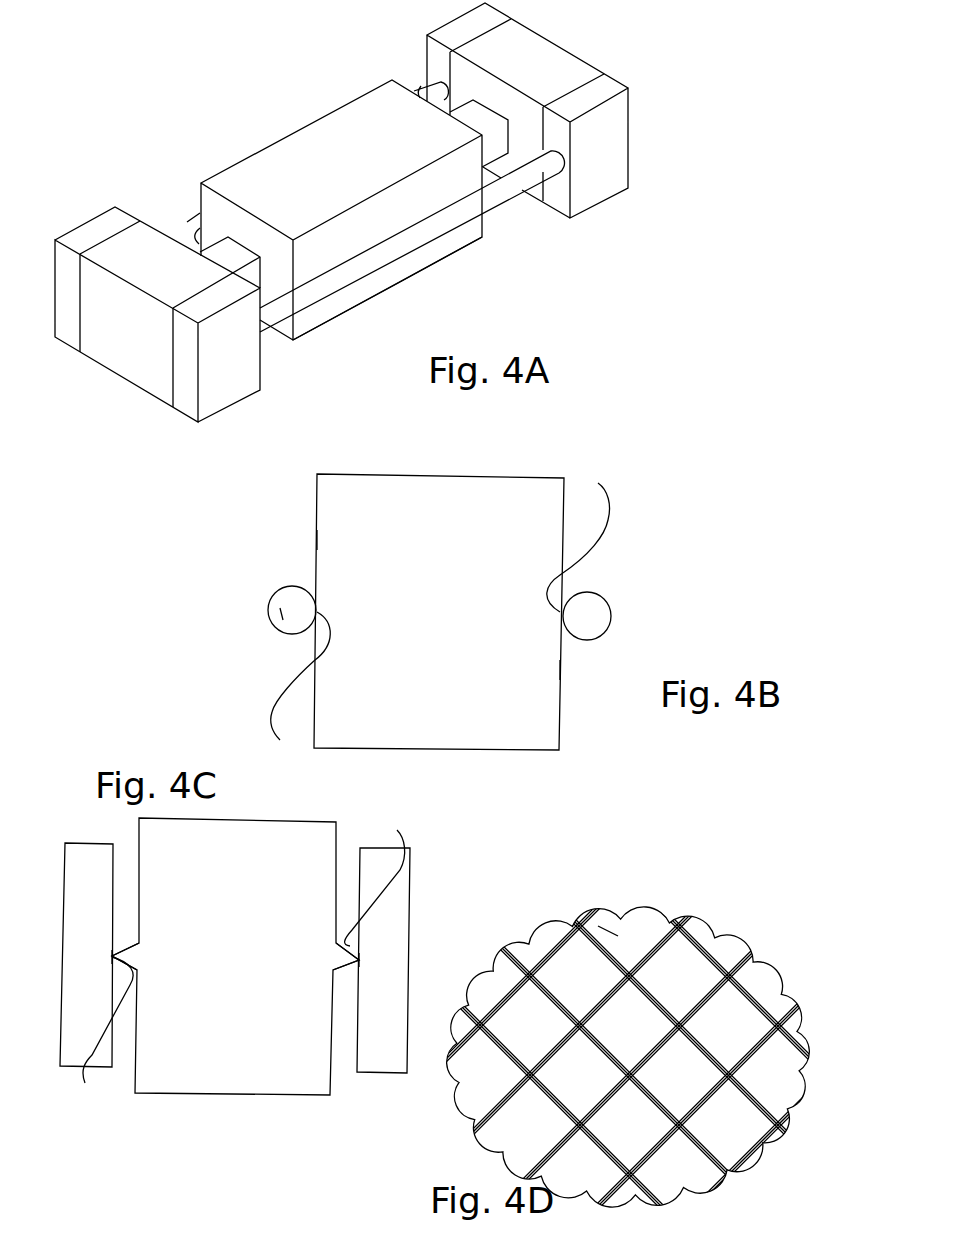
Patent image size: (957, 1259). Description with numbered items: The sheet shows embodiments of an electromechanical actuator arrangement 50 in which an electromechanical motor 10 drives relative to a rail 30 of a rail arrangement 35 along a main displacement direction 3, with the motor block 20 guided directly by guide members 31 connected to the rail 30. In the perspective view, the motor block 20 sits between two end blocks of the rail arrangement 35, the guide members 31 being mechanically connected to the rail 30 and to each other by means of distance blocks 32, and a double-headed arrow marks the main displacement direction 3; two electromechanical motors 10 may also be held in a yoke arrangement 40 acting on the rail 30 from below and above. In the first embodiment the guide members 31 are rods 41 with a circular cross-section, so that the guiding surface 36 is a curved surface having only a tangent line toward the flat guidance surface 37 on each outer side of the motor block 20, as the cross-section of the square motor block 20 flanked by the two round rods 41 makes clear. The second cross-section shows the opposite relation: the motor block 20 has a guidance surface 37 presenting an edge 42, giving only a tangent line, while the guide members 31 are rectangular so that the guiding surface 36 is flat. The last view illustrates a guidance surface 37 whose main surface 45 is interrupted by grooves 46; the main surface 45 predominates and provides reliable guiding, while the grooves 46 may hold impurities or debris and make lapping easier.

In FIG. 4A, the main displacement direction 3 is at (777, 173).
In FIG. 4A, the electromechanical motor 10 is at (273, 155).
In FIG. 4A, the motor block 20 is at (437, 188).
In FIG. 4B, the motor block 20 is at (527, 737).
In FIG. 4C, the motor block 20 is at (323, 1082).
In FIG. 4A, the rail 30 is at (225, 258).
In FIG. 4A, the guide members 31 is at (187, 222).
In FIG. 4B, the guide members 31 is at (280, 608).
In FIG. 4C, the guide members 31 is at (102, 858).
In FIG. 4A, the distance blocks 32 is at (120, 343).
In FIG. 4A, the rail arrangement 35 is at (143, 377).
In FIG. 4A, the guiding surface 36 is at (200, 252).
In FIG. 4B, the guiding surface 36 is at (440, 612).
In FIG. 4C, the guiding surface 36 is at (241, 956).
In FIG. 4A, the guidance surface 37 is at (363, 287).
In FIG. 4B, the guidance surface 37 is at (317, 540).
In FIG. 4C, the guidance surface 37 is at (112, 957).
In FIG. 4D, the guidance surface 37 is at (623, 933).
In FIG. 4A, the yoke arrangement 40 is at (312, 95).
In FIG. 4A, the rods 41 is at (423, 93).
In FIG. 4B, the rods 41 is at (283, 620).
In FIG. 4C, the edge 42 is at (112, 957).
In FIG. 4D, the main surface 45 is at (743, 1165).
In FIG. 4D, the grooves 46 is at (560, 977).
In FIG. 4A, the electromechanical actuator arrangement 50 is at (200, 97).
In FIG. 4B, the electromechanical actuator arrangement 50 is at (636, 508).
In FIG. 4C, the electromechanical actuator arrangement 50 is at (165, 1118).